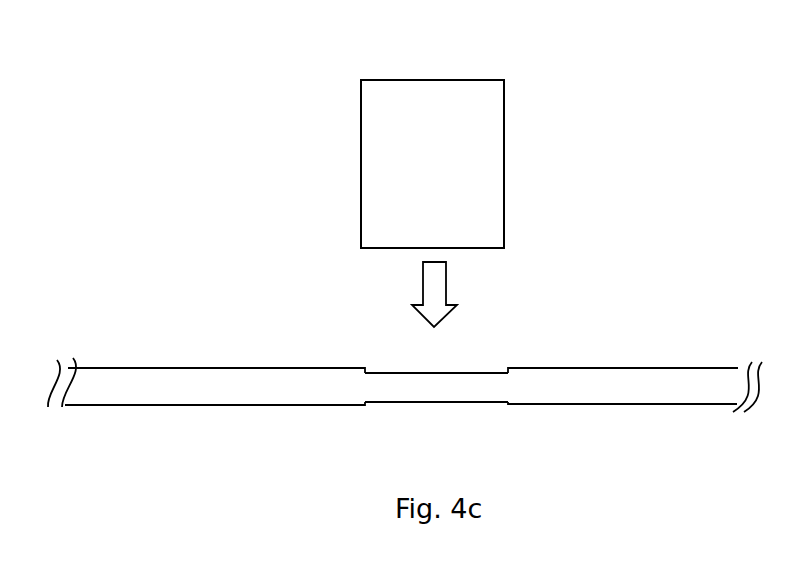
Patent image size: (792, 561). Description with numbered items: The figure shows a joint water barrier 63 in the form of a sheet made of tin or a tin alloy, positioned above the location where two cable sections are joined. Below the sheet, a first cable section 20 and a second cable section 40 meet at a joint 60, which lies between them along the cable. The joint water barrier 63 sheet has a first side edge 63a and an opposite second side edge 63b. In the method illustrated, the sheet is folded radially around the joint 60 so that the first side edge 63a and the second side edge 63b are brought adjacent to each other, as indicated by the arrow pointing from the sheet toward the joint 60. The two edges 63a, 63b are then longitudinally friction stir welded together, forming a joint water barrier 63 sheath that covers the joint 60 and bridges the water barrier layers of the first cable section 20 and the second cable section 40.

The joint water barrier 63 is at (525, 172).
The first side edge 63a is at (469, 79).
The second side edge 63b is at (382, 249).
The first cable section 20 is at (239, 368).
The joint 60 is at (493, 352).
The second cable section 40 is at (632, 345).